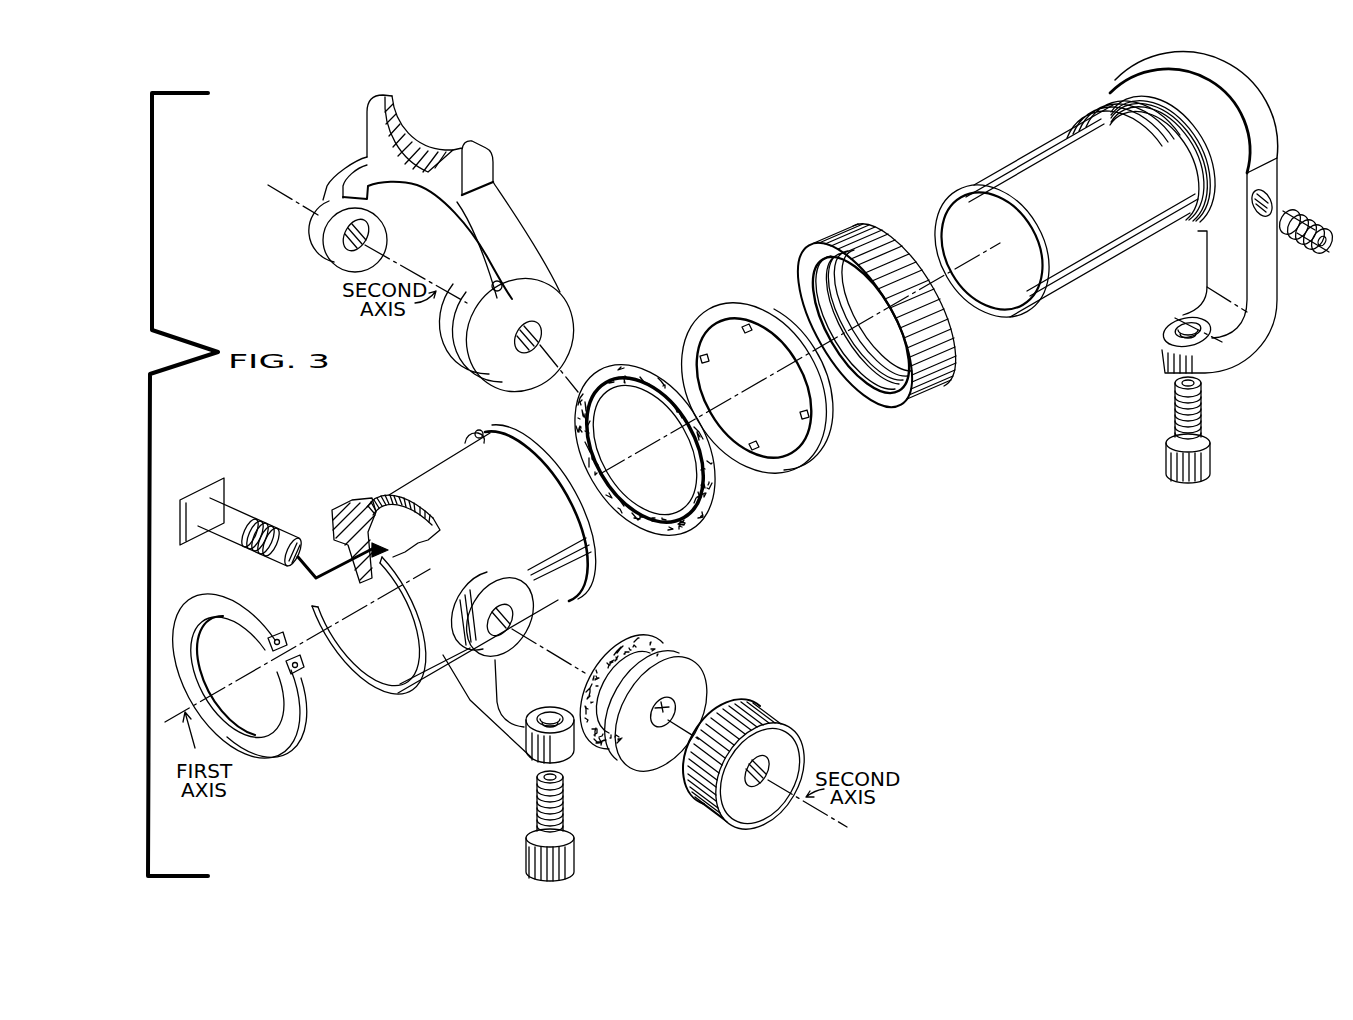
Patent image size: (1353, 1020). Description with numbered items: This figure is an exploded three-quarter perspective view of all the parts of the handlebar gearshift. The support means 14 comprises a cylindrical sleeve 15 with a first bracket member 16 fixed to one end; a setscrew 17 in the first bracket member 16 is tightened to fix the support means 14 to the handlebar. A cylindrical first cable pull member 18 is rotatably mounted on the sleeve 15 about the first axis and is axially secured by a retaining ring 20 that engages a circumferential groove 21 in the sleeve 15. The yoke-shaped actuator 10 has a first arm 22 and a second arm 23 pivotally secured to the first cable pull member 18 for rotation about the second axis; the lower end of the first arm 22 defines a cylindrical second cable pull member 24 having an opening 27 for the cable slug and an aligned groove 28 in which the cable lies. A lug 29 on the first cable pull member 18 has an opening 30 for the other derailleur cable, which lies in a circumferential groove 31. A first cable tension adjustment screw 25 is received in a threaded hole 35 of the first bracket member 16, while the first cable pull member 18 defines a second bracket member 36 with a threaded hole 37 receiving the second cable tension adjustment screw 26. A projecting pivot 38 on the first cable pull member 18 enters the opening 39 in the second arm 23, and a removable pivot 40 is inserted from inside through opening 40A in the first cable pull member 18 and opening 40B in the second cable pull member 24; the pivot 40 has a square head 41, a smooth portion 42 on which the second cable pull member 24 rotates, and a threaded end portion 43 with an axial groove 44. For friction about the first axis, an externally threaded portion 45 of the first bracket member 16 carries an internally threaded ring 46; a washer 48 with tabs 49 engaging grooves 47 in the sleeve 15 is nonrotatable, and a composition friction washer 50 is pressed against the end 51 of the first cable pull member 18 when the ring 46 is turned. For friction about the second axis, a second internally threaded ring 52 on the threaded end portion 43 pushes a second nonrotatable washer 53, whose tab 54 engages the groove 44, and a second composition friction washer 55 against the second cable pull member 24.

The yoke-shaped actuator 10 is at (426, 138).
The support means 14 is at (1055, 207).
The cylindrical sleeve 15 is at (1055, 207).
The first bracket member 16 is at (1223, 212).
The setscrew 17 is at (1300, 243).
The first cable pull member 18 is at (470, 583).
The retaining ring 20 is at (277, 743).
The circumferential groove 21 is at (1046, 243).
The first arm 22 is at (461, 253).
The second arm 23 is at (338, 173).
The second cable pull member 24 is at (519, 335).
The first cable tension adjustment screw 25 is at (1210, 463).
The second cable tension adjustment screw 26 is at (570, 852).
The opening 27 is at (492, 285).
The groove 28 is at (468, 343).
The lug 29 is at (460, 440).
The opening 30 is at (478, 431).
The circumferential groove 31 is at (520, 443).
The threaded hole 35 is at (1168, 320).
The second bracket member 36 is at (473, 697).
The threaded hole 37 is at (533, 720).
The projecting pivot 38 is at (333, 507).
The opening 39 is at (366, 236).
The removable pivot 40 is at (240, 515).
The opening 40A is at (505, 620).
The opening 40B is at (545, 338).
The square head 41 is at (190, 490).
The smooth portion 42 is at (230, 527).
The threaded end portion 43 is at (257, 557).
The groove 44 is at (283, 537).
The externally threaded portion 45 is at (1087, 103).
The internally threaded ring 46 is at (920, 387).
The groove 47 is at (1041, 166).
The washer 48 is at (754, 388).
The tab 49 is at (747, 331).
The washer 50 is at (700, 513).
The end 51 is at (587, 553).
The second internally threaded ring 52 is at (792, 732).
The second nonrotatable washer 53 is at (664, 714).
The tab 54 is at (663, 704).
The second composition friction washer 55 is at (652, 640).